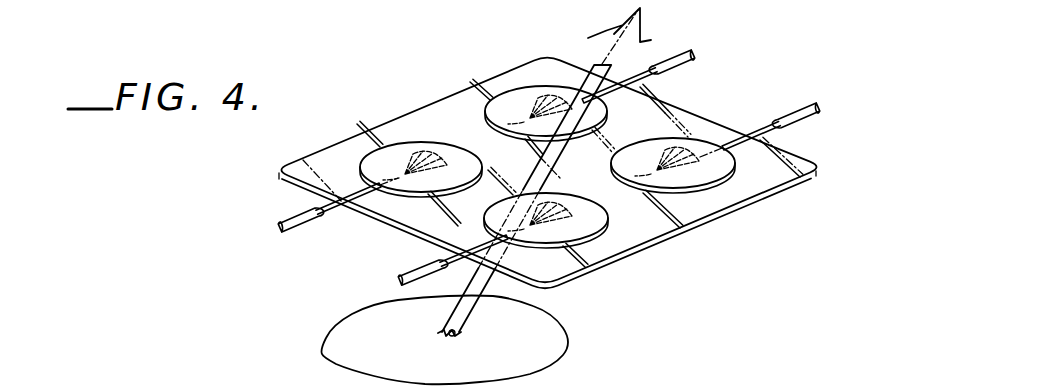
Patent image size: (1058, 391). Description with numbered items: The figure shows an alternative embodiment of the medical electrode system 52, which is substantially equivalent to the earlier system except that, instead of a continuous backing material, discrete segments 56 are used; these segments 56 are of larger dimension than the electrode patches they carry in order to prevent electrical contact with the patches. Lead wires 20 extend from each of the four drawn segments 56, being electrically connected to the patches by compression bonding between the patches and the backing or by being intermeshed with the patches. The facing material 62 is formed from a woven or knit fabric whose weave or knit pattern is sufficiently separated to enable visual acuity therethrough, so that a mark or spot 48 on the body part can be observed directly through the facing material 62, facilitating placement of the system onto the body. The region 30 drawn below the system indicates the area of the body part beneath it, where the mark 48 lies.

The lead wires 20 is at (690, 66).
The target tissue area 30 is at (567, 334).
The mark 48 is at (440, 333).
The medical electrode system 52 is at (409, 78).
The discrete segments 56 is at (388, 150).
The facing material 62 is at (687, 215).